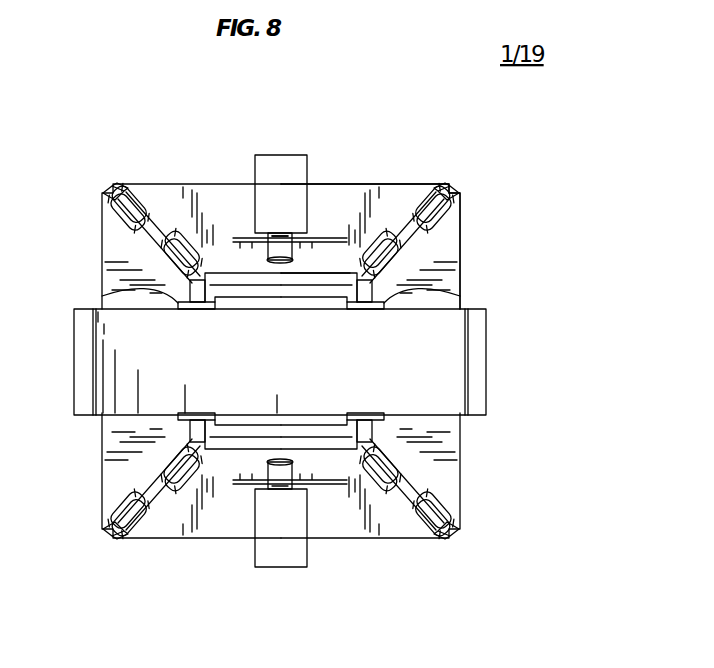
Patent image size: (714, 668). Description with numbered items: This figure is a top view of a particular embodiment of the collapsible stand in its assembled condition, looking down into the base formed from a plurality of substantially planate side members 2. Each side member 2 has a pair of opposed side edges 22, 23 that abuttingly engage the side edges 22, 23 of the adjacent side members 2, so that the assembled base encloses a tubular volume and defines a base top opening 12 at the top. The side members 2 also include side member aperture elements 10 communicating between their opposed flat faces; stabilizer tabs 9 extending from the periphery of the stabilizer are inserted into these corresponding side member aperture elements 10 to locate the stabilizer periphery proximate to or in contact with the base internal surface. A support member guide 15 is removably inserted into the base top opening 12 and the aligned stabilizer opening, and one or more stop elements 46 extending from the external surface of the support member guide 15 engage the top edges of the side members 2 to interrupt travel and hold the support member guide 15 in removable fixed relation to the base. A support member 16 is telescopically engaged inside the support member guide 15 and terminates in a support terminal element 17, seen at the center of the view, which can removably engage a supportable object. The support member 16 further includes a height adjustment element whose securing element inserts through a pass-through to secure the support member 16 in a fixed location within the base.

The side member 2 is at (391, 207).
The stabilizer tab 9 is at (288, 162).
The side member aperture element 10 is at (330, 256).
The base top opening 12 is at (350, 273).
The support member guide 15 is at (232, 308).
The support member 16 is at (257, 301).
The support terminal element 17 is at (489, 358).
The side edge 22 is at (130, 195).
The side edge 23 is at (108, 190).
The stop element 46 is at (115, 295).